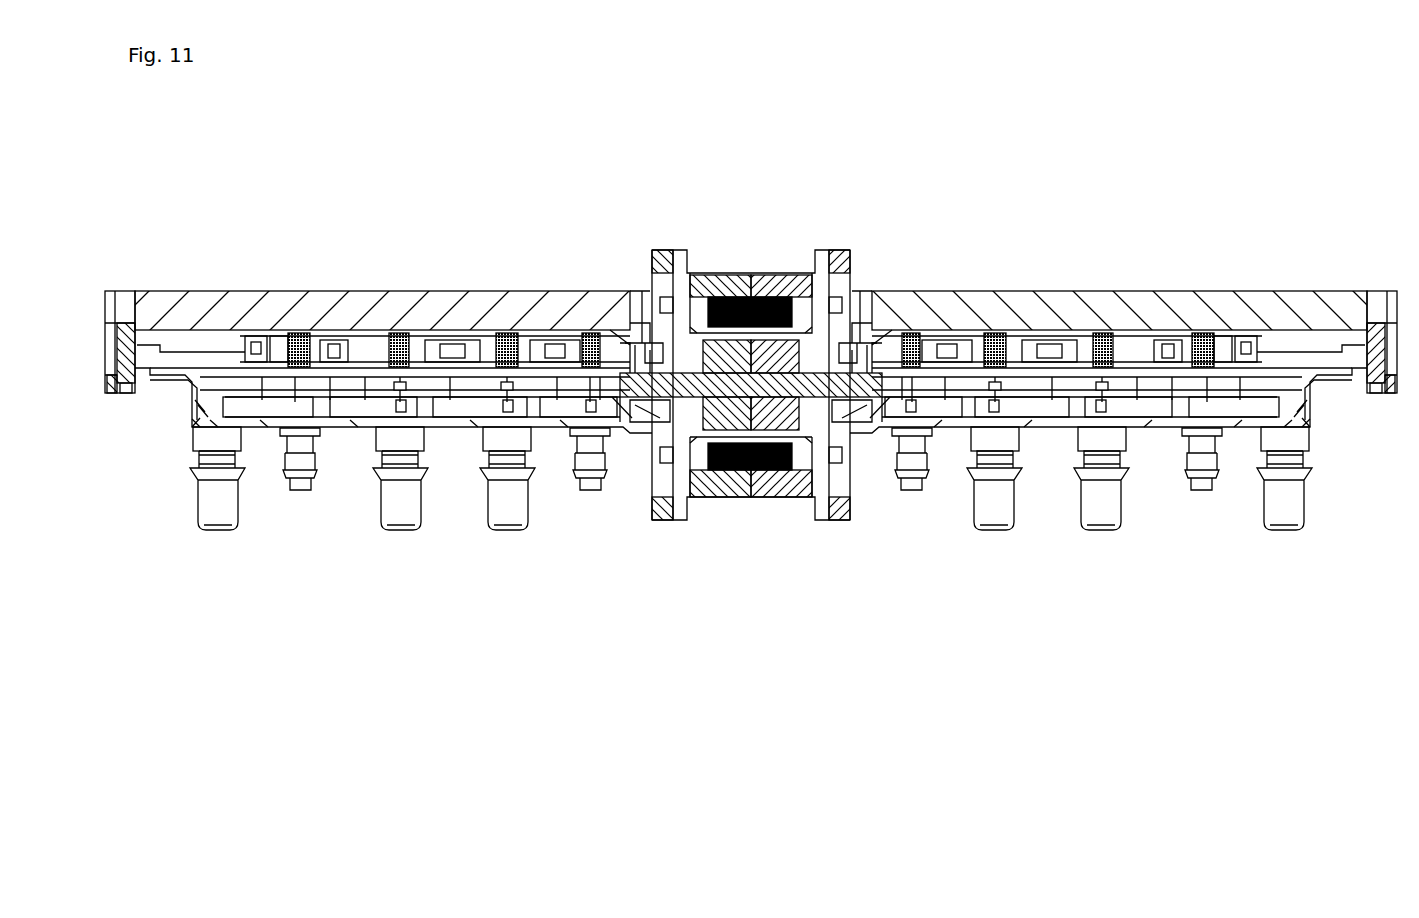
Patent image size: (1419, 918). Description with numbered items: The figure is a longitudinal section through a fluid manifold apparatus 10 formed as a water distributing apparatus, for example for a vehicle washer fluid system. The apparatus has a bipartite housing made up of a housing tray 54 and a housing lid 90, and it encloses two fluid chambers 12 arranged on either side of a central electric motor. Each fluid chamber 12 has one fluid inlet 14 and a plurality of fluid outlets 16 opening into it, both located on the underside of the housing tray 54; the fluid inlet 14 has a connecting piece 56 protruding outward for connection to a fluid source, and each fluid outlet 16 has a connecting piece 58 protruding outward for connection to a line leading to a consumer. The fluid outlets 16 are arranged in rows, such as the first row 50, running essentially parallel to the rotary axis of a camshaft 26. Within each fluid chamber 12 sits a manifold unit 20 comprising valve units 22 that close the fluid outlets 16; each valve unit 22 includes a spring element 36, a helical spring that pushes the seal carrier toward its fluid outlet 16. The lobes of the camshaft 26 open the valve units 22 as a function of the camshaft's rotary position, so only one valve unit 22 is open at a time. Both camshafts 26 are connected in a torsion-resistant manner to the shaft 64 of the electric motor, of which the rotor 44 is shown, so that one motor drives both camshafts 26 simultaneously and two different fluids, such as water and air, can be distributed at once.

The fluid manifold apparatus 10 is at (690, 248).
The fluid chamber 12 is at (200, 337).
The fluid inlet 14 is at (207, 497).
The fluid outlet 16 is at (502, 497).
The manifold unit 20 is at (540, 322).
The valve unit 22 is at (418, 330).
The camshaft 26 is at (363, 385).
The spring element 36 is at (300, 335).
The rotor 44 is at (748, 262).
The first row 50 is at (247, 355).
The housing tray 54 is at (192, 430).
The connecting piece 56 is at (751, 459).
The connecting piece 58 is at (751, 459).
The shaft 64 is at (643, 323).
The housing lid 90 is at (140, 303).